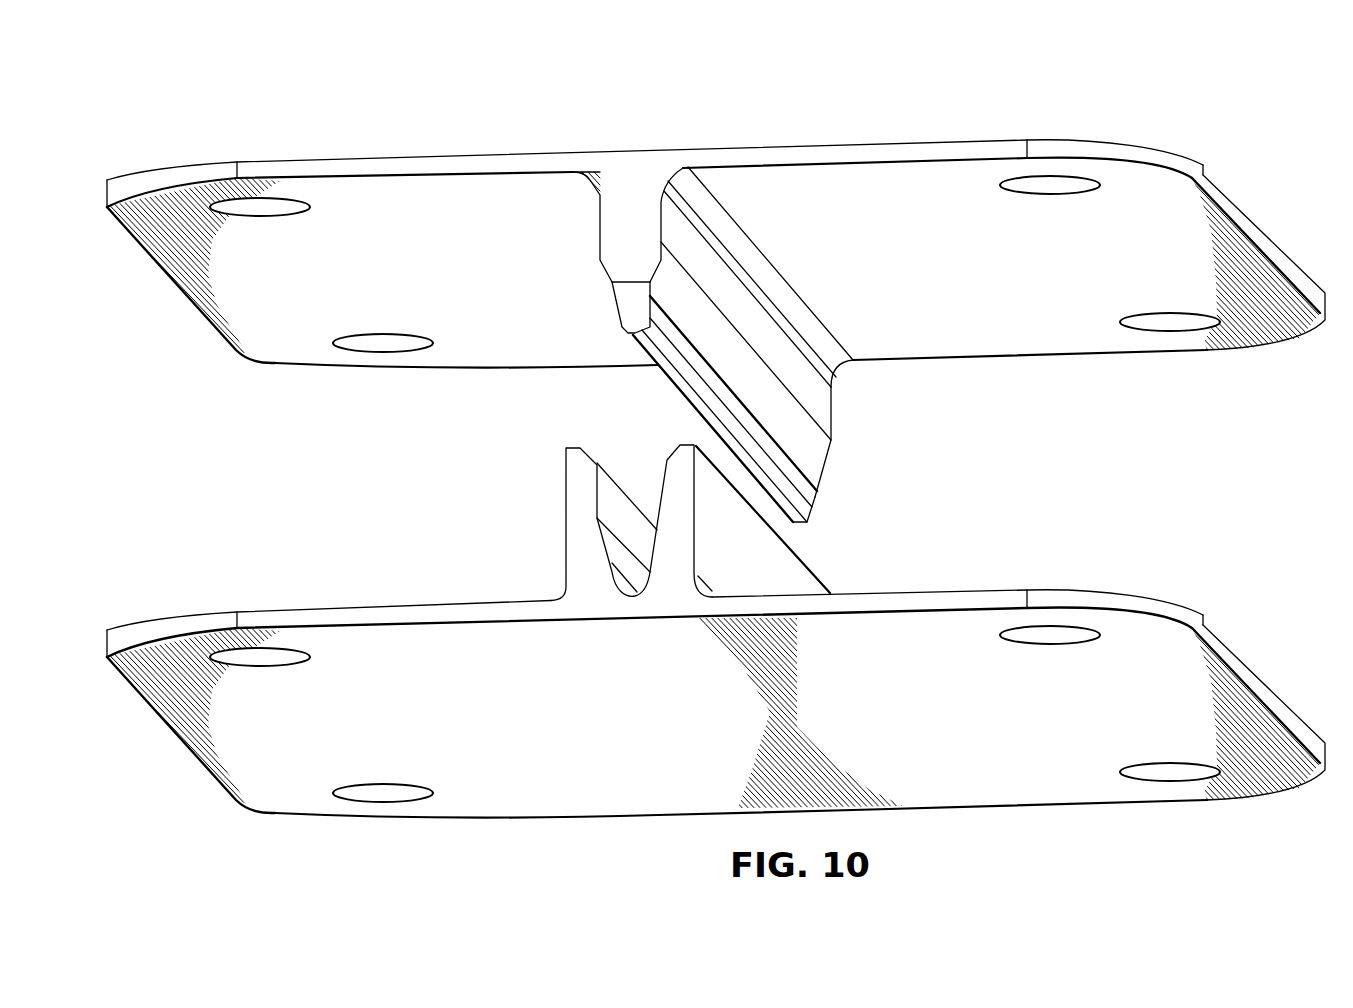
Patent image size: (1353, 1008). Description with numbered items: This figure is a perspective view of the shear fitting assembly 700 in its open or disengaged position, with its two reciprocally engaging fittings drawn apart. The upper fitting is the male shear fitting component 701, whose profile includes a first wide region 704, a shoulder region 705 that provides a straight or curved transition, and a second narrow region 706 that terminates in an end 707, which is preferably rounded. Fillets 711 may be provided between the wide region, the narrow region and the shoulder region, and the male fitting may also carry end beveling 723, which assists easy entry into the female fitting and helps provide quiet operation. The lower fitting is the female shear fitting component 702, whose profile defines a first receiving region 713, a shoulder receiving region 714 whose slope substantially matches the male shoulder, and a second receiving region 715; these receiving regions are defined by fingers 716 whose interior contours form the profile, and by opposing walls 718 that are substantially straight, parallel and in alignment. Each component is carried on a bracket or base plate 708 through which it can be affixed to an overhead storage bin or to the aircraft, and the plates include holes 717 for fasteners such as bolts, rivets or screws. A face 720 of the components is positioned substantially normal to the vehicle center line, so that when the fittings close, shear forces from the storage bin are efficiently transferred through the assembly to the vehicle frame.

The shear fitting assembly 700 is at (252, 110).
The male shear fitting component 701 is at (469, 146).
The female shear fitting component 702 is at (656, 634).
The first wide region 704 is at (600, 226).
The shoulder region 705 is at (826, 470).
The second narrow region 706 is at (815, 500).
The end 707 is at (680, 388).
The base plate 708 is at (965, 274).
The fillets 711 is at (853, 362).
The first receiving region 713 is at (597, 500).
The shoulder receiving region 714 is at (600, 537).
The second receiving region 715 is at (605, 574).
The fingers 716 is at (770, 574).
The holes 717 is at (1052, 190).
The opposing walls 718 is at (597, 490).
The face 720 is at (728, 290).
The end beveling 723 is at (626, 312).